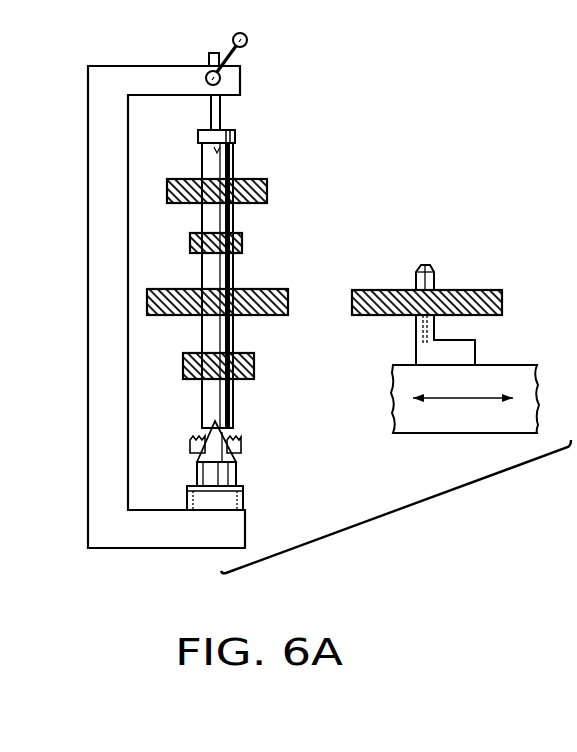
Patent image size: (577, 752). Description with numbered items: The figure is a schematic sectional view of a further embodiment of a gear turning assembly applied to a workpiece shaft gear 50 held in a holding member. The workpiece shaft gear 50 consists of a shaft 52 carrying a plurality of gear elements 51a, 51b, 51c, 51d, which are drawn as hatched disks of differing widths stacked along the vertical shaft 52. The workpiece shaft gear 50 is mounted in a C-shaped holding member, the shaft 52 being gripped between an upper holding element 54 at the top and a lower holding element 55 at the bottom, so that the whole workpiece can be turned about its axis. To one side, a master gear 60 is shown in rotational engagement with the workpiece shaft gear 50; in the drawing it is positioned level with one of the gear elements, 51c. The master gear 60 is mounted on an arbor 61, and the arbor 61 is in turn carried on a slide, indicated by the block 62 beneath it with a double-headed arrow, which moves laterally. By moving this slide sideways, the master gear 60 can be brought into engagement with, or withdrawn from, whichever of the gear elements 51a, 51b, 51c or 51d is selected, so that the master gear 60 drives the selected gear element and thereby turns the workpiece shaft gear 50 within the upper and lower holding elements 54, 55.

The workpiece shaft gear 50 is at (274, 164).
The gear element 51a is at (267, 188).
The gear element 51b is at (242, 238).
The gear element 51c is at (273, 310).
The gear element 51d is at (254, 372).
The shaft 52 is at (210, 396).
The upper holding element 54 is at (213, 115).
The lower holding element 55 is at (252, 444).
The master gear 60 is at (462, 290).
The arbor 61 is at (421, 268).
The slide carrier 62 is at (490, 368).